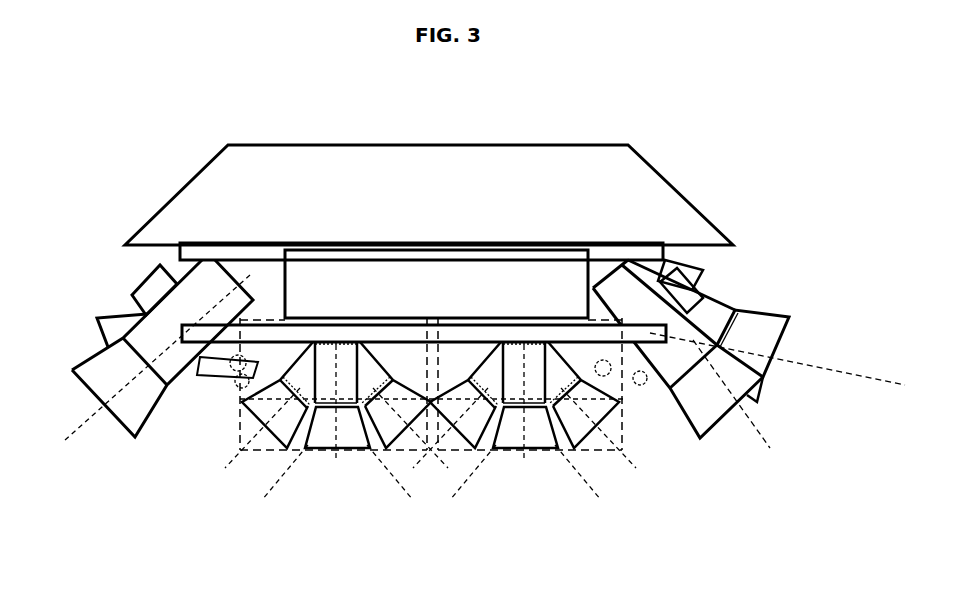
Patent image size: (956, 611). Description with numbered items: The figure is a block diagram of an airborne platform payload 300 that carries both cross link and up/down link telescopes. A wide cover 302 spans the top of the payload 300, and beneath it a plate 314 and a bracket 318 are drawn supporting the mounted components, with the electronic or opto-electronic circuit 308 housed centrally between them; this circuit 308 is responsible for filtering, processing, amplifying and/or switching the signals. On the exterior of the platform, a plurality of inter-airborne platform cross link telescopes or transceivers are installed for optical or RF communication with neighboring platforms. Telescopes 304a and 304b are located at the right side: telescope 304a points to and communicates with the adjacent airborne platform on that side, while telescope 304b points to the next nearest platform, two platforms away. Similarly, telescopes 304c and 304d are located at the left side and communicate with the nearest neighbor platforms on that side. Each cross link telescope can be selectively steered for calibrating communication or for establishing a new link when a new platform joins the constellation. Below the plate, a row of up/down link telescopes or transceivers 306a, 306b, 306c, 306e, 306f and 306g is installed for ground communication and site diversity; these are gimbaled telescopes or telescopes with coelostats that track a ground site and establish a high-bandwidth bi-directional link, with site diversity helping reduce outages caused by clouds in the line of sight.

The airborne platform payload 300 is at (475, 314).
The top cover 302 is at (632, 158).
The electronic or opto-electronic circuit 308 is at (460, 252).
The upper mounting plate 314 is at (190, 256).
The camera mount bracket 318 is at (643, 270).
The inter-airborne platform (cross link) telescope or transceiver 304a is at (772, 313).
The inter-airborne platform (cross link) telescope or transceiver 304b is at (717, 428).
The inter-airborne platform (cross link) telescope or transceiver 304c is at (97, 332).
The inter-airborne platform (cross link) telescope or transceiver 304d is at (118, 418).
The up/down link telescope or transceiver 306a is at (242, 417).
The up/down link telescope or transceiver 306b is at (300, 450).
The up/down link telescope or transceiver 306c is at (385, 440).
The up/down link telescope or transceiver 306e is at (480, 445).
The up/down link telescope or transceiver 306f is at (535, 443).
The up/down link telescope or transceiver 306g is at (612, 413).